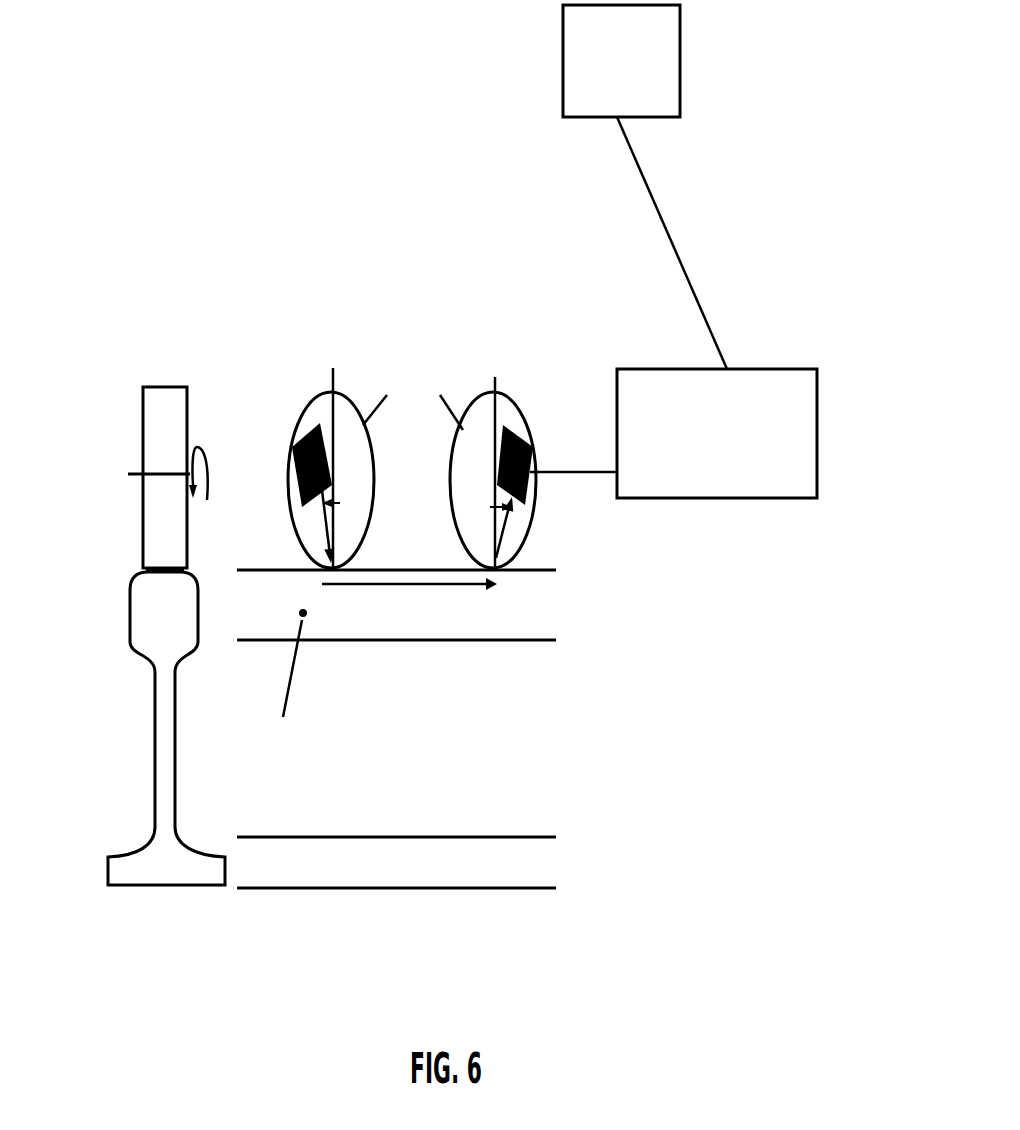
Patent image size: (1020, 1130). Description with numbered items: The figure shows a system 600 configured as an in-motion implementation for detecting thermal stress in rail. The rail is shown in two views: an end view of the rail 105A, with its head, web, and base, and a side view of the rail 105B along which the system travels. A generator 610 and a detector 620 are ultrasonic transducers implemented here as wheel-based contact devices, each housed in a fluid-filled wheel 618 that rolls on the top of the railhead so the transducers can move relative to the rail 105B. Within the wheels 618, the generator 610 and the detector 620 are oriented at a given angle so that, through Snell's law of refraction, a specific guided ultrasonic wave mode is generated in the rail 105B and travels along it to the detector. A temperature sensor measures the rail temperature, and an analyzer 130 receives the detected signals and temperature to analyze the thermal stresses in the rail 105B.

The system 600 is at (392, 181).
The analyzer 130 is at (768, 449).
The rail (end view) 105A is at (178, 767).
The rail (side view) 105B is at (562, 722).
The fluid-filled wheel 618 is at (142, 515).
The generator 610 is at (288, 475).
The detector 620 is at (533, 527).